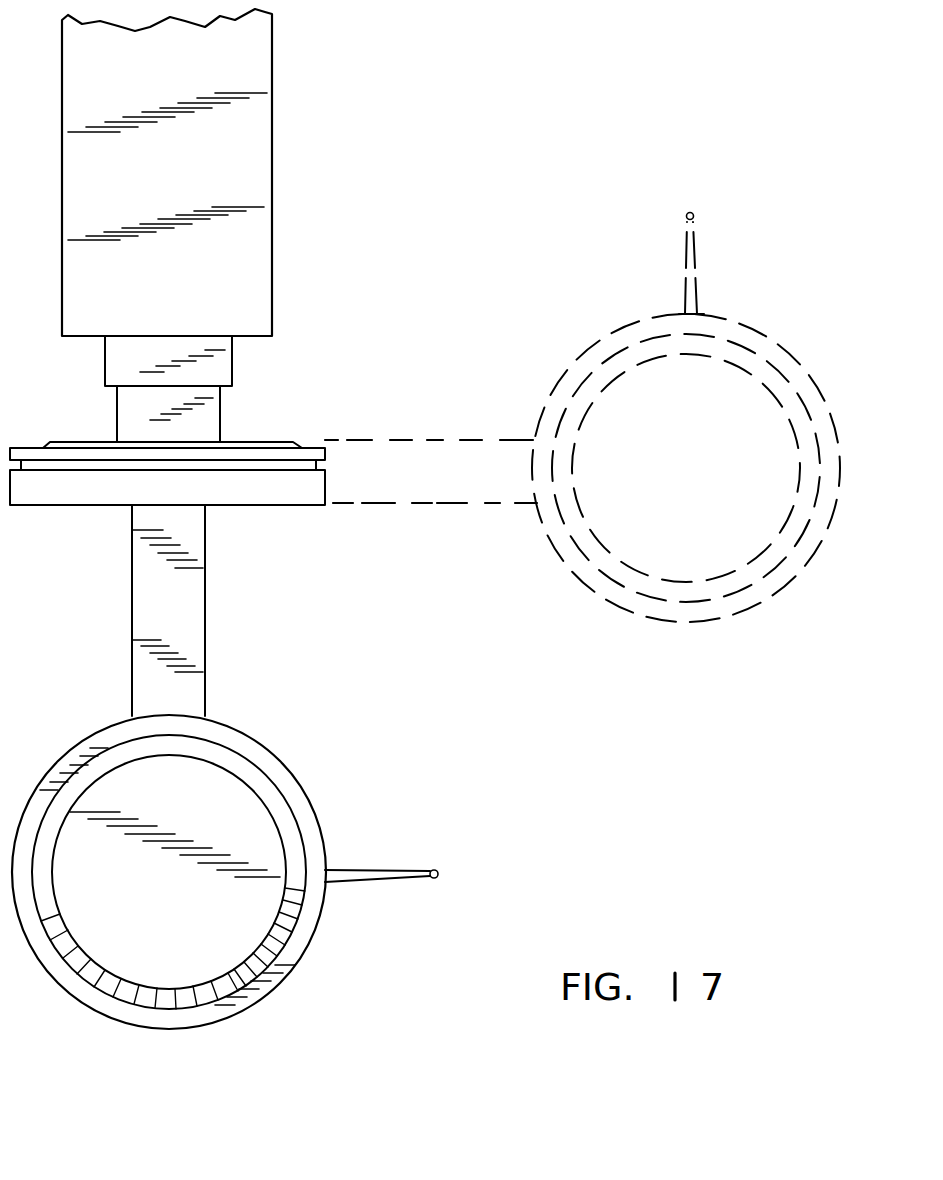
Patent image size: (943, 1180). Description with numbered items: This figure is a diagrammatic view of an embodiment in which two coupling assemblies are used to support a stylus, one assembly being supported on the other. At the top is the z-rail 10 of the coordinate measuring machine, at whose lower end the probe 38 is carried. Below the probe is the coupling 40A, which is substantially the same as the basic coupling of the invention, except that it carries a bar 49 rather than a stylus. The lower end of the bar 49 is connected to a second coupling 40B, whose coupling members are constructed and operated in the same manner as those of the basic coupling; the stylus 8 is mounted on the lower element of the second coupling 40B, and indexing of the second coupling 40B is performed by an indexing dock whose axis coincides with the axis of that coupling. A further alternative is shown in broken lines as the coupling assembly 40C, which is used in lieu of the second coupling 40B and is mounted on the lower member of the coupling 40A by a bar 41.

The z-rail 10 is at (258, 150).
The probe 38 is at (221, 363).
The coupling 40A is at (275, 490).
The bar 41 is at (417, 490).
The coupling assembly 40C is at (630, 528).
The bar 49 is at (150, 600).
The second coupling 40B is at (240, 797).
The stylus 8 is at (360, 872).